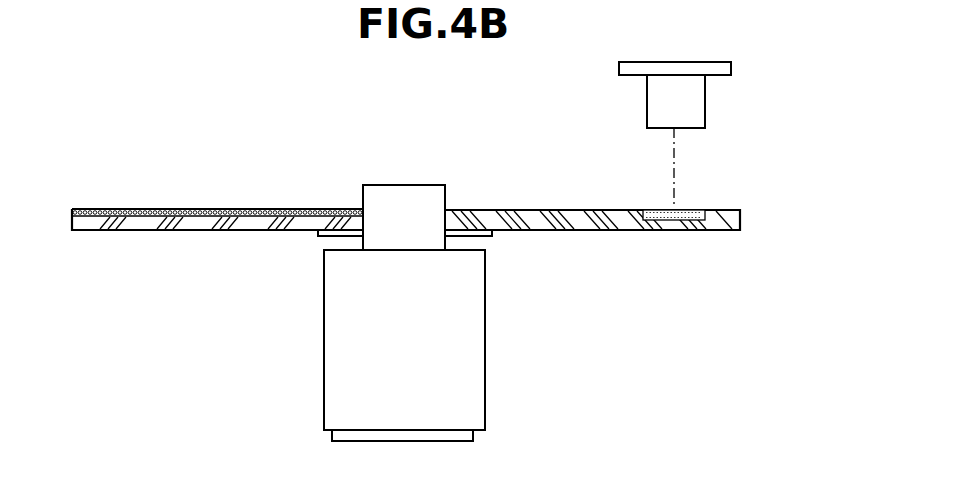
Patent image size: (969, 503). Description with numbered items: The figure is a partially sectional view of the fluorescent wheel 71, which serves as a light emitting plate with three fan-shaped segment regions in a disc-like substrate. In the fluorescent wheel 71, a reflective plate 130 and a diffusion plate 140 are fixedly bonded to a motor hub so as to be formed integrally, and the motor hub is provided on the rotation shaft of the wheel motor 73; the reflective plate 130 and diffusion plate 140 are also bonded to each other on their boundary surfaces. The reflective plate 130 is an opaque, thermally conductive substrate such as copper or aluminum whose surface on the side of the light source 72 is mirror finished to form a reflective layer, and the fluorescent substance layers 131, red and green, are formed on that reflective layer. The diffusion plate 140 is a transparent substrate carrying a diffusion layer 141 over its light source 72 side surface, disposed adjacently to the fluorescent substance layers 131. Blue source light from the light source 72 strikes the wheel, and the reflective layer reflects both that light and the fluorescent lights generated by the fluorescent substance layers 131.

The fluorescent wheel 71 is at (742, 223).
The light source 72 is at (685, 99).
The wheel motor 73 is at (338, 350).
The reflective plate 130 is at (592, 230).
The fluorescent substance layers 131 is at (653, 210).
The diffusion plate 140 is at (142, 230).
The diffusion layer 141 is at (137, 207).